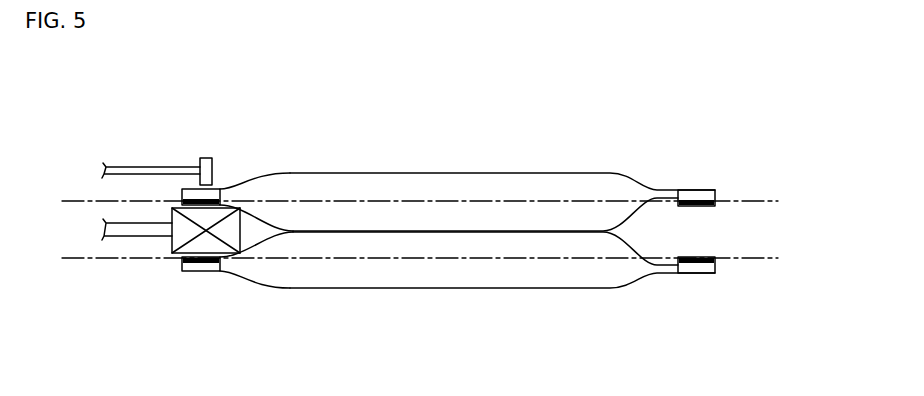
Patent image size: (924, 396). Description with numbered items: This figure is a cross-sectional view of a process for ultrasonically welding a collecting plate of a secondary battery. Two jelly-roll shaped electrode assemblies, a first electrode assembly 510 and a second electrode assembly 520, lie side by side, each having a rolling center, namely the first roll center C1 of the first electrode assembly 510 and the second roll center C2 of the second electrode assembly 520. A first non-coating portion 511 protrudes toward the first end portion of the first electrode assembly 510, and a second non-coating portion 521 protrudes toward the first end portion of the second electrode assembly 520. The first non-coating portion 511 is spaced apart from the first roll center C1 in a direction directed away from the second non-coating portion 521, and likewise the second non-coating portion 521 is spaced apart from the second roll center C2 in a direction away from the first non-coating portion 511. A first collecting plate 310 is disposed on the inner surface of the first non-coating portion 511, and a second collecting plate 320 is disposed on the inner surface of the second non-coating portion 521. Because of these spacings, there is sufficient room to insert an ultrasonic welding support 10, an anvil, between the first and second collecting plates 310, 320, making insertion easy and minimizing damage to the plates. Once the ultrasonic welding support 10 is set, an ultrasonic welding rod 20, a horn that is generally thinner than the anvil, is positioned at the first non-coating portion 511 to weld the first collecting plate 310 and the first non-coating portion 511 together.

The ultrasonic welding support 10 is at (172, 248).
The ultrasonic welding rod 20 is at (154, 167).
The first collecting plate 310 is at (222, 194).
The second collecting plate 320 is at (215, 265).
The first electrode assembly 510 is at (497, 168).
The second electrode assembly 520 is at (498, 294).
The first positive electrode non-coating portion 511 is at (217, 189).
The second positive electrode non-coating portion 521 is at (192, 271).
The first roll center C1 is at (70, 200).
The second roll center C2 is at (68, 261).